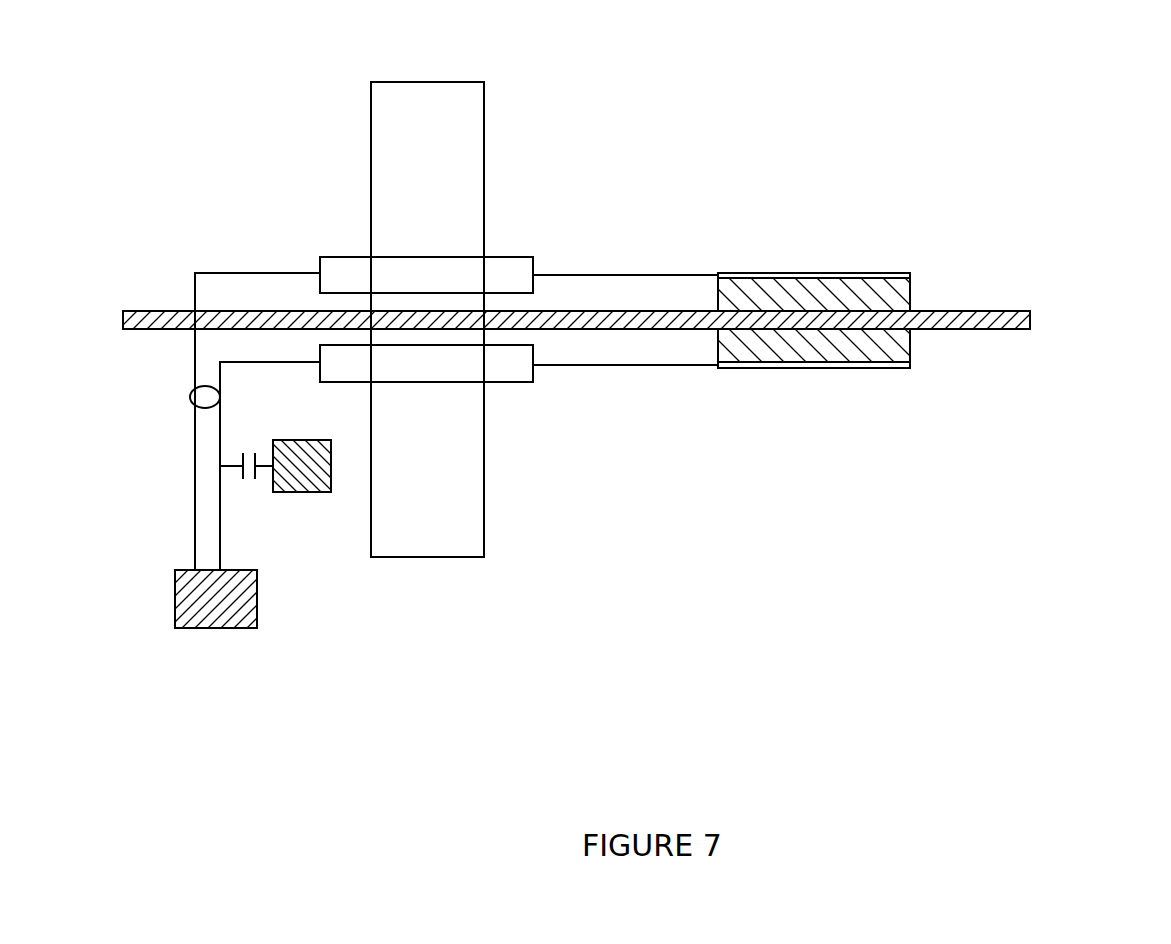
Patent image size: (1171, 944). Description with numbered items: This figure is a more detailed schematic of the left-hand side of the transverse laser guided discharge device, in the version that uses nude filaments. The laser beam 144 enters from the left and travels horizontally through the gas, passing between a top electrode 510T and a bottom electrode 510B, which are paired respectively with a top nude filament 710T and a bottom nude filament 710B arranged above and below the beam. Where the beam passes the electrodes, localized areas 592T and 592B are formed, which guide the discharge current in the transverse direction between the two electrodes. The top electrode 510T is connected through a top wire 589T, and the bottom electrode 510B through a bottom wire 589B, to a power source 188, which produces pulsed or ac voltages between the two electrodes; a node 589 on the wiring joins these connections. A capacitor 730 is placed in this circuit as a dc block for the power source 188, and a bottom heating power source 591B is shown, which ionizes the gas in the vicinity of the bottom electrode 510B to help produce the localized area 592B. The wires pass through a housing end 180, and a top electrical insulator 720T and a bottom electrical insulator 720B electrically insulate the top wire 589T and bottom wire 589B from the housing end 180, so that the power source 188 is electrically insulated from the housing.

The housing end 180 is at (415, 82).
The laser beam 144 is at (152, 309).
The top electrical insulator 720T is at (560, 238).
The bottom electrical insulator 720B is at (533, 382).
The top wire 589T is at (297, 272).
The bottom wire 589B is at (310, 362).
The voltage source node 589 is at (190, 395).
The capacitor 730 is at (243, 452).
The bottom heating power source 591B is at (300, 492).
The power source 188 is at (177, 598).
The top nude filament 710T is at (798, 273).
The top electrode 510T is at (814, 252).
The top localized area 592T is at (845, 292).
The bottom localized area 592B is at (830, 342).
The bottom electrode 510B is at (814, 345).
The bottom nude filament 710B is at (827, 368).